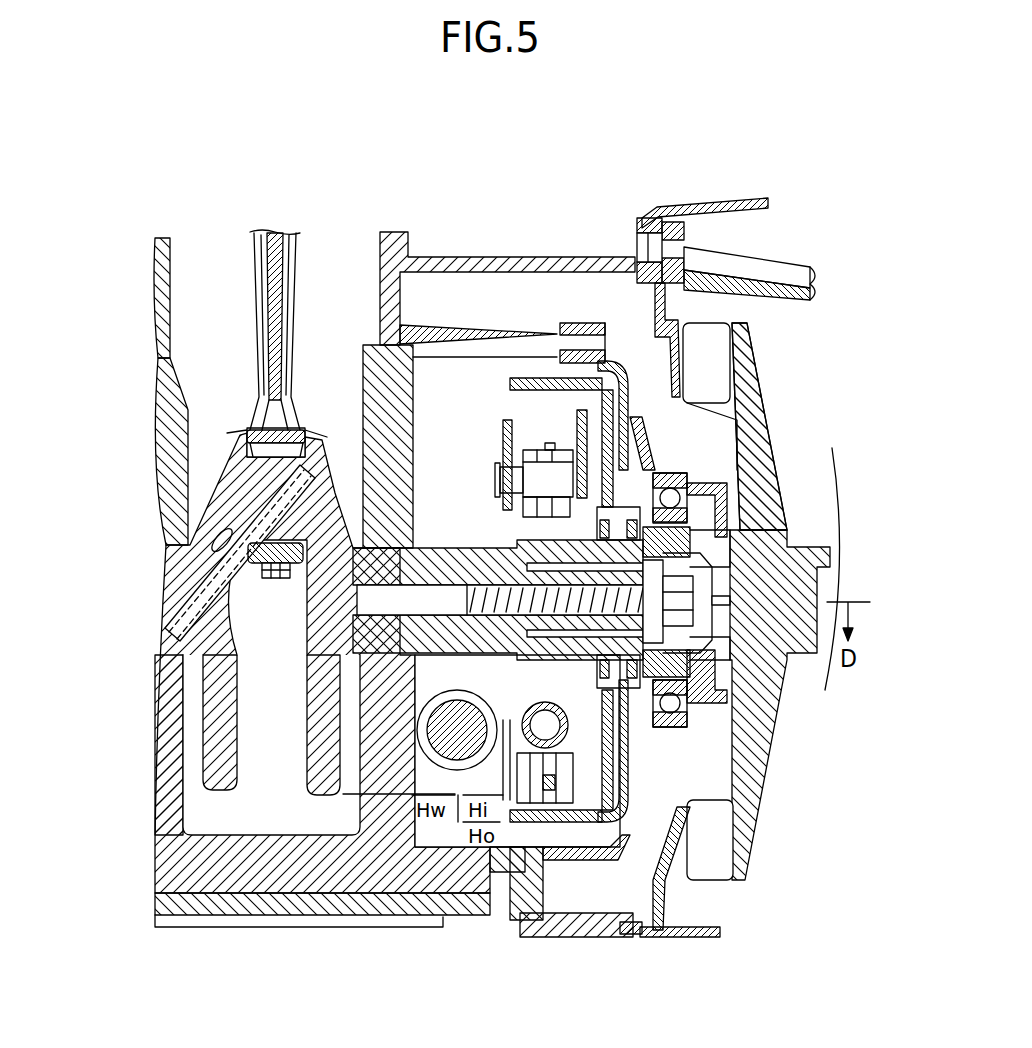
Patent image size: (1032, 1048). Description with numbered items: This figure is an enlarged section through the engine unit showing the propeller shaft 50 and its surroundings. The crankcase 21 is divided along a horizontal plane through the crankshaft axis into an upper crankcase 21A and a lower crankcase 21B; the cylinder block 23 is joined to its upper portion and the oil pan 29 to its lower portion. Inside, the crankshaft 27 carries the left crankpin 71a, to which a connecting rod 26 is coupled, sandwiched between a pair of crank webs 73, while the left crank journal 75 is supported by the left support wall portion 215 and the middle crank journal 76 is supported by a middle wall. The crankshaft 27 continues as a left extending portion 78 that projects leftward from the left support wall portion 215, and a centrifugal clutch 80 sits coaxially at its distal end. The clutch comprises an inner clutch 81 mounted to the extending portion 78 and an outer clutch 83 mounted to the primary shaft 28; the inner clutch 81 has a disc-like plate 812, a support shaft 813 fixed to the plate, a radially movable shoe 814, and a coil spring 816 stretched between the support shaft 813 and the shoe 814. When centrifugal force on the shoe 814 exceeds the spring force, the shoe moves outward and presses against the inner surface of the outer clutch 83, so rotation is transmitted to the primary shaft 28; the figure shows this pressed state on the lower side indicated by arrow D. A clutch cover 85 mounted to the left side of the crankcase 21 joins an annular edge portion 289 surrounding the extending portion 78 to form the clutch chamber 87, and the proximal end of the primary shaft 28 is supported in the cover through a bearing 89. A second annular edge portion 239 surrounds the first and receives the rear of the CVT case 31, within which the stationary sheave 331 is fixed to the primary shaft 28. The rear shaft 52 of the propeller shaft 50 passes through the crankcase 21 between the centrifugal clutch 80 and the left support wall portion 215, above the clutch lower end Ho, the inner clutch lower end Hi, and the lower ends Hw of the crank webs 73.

The crankcase 21 is at (277, 565).
The cylinder block 23 is at (160, 262).
The upper crankcase 21A is at (170, 476).
The lower crankcase 21B is at (168, 726).
The crankshaft 27 is at (148, 602).
The connecting rod 26 is at (289, 278).
The middle crank journal 76 is at (176, 562).
The crank webs 73 is at (318, 742).
The left crankpin 71a is at (270, 518).
The left support wall portion 215 is at (372, 718).
The left crank journal 75 is at (398, 545).
The left extending portion 78 is at (452, 562).
The clutch chamber 87 is at (483, 378).
The inner clutch 81 is at (533, 428).
The plate 812 is at (560, 477).
The support shaft 813 is at (560, 477).
The stationary sheave 331 is at (748, 368).
The clutch cover 85 is at (700, 487).
The bearing 89 is at (672, 485).
The primary shaft 28 is at (805, 588).
The coil spring 816 is at (562, 736).
The shoe 814 is at (570, 800).
The centrifugal clutch 80 is at (635, 815).
The oil pan 29 is at (310, 907).
The rear shaft 52 is at (460, 849).
The propeller shaft 50 is at (455, 748).
The annular edge portion 289 is at (537, 853).
The annular edge portion 239 is at (583, 937).
The outer clutch 83 is at (580, 822).
The CVT case 31 is at (690, 937).